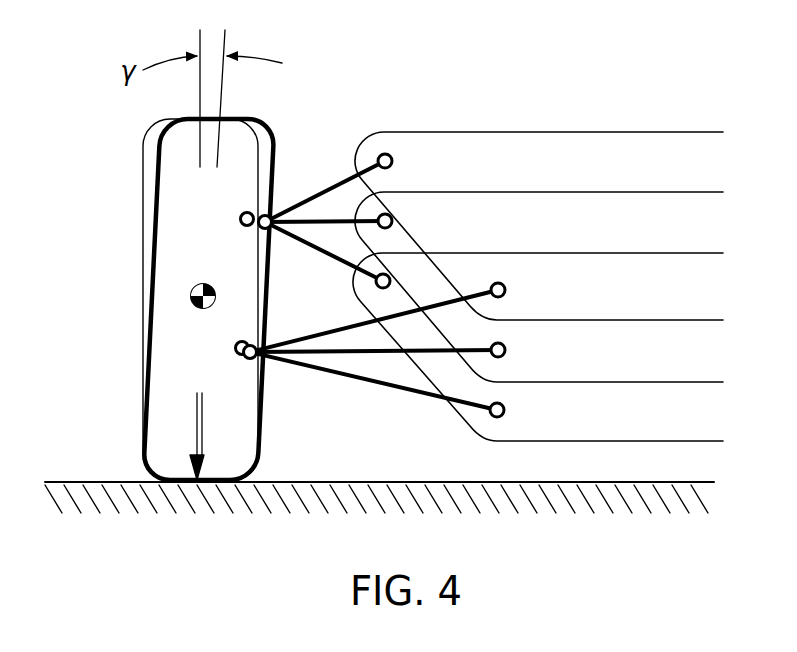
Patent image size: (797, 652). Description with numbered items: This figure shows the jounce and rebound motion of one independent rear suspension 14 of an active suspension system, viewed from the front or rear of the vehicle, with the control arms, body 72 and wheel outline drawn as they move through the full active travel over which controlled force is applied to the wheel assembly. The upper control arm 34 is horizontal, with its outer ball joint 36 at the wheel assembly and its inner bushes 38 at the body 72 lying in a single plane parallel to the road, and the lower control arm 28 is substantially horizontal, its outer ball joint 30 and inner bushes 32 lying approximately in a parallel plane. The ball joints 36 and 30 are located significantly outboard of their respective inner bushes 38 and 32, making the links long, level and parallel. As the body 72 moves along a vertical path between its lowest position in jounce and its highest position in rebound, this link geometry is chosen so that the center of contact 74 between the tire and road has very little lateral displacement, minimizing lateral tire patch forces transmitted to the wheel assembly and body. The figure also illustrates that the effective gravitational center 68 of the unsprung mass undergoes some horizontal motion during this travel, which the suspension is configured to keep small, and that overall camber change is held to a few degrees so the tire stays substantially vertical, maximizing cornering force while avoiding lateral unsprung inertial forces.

The independent rear suspension 14 is at (78, 193).
The lower control arm 28 is at (373, 354).
The outer ball joint 30 is at (238, 348).
The inner bushes 32 is at (507, 350).
The upper control arm 34 is at (330, 218).
The outer ball joint 36 is at (241, 219).
The inner bushes 38 is at (393, 219).
The center of gravity of the effective unsprung mass 68 is at (191, 296).
The body 72 is at (540, 132).
The center of contact 74 is at (197, 486).